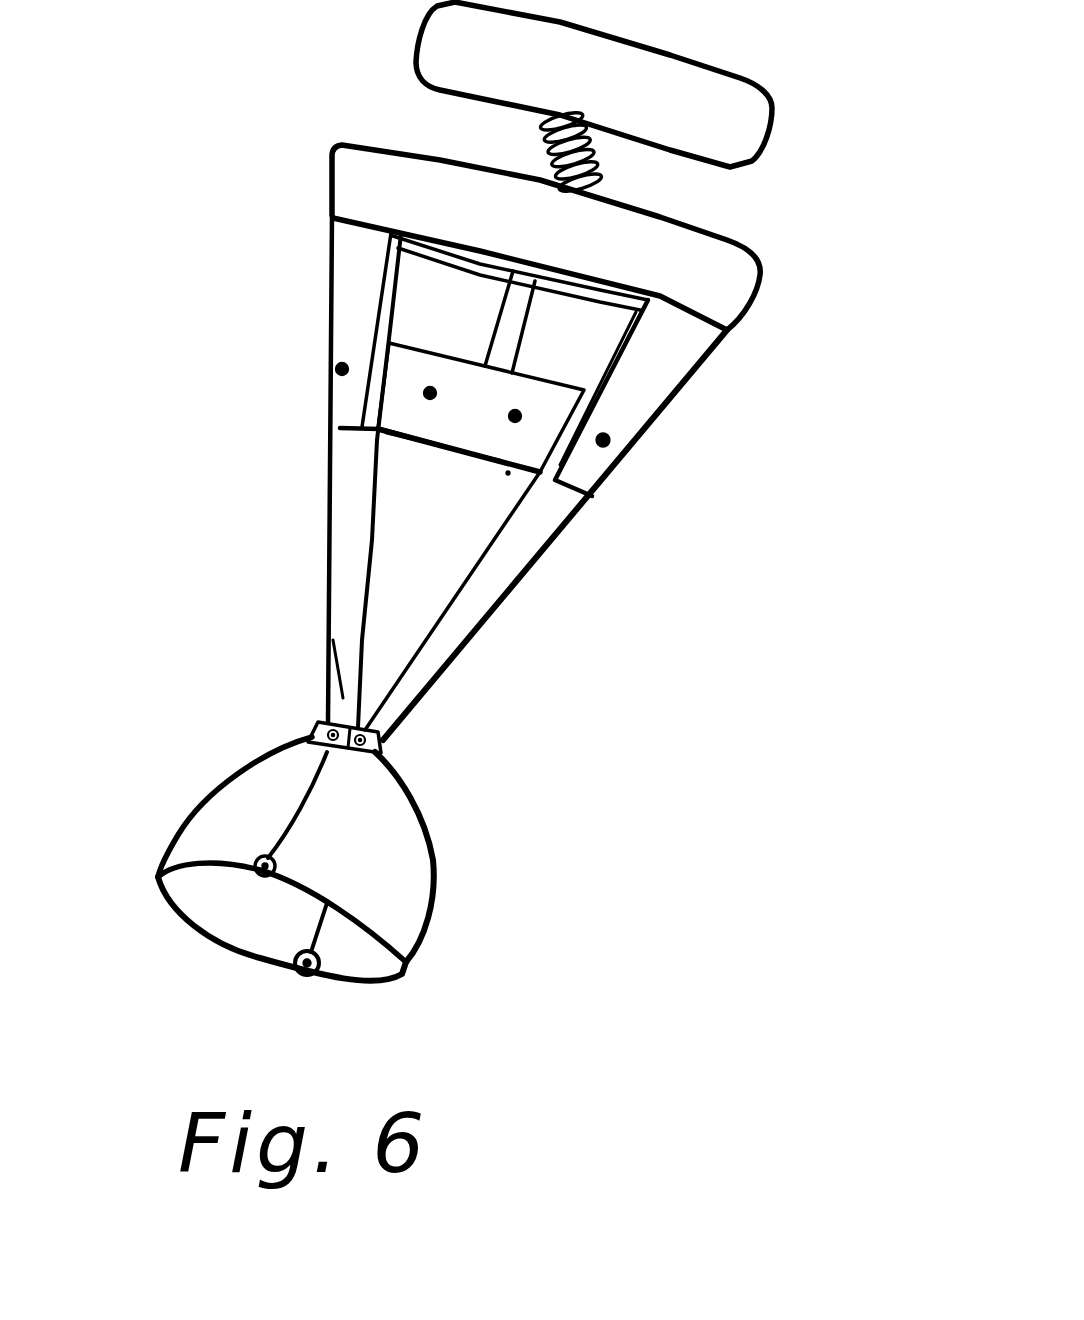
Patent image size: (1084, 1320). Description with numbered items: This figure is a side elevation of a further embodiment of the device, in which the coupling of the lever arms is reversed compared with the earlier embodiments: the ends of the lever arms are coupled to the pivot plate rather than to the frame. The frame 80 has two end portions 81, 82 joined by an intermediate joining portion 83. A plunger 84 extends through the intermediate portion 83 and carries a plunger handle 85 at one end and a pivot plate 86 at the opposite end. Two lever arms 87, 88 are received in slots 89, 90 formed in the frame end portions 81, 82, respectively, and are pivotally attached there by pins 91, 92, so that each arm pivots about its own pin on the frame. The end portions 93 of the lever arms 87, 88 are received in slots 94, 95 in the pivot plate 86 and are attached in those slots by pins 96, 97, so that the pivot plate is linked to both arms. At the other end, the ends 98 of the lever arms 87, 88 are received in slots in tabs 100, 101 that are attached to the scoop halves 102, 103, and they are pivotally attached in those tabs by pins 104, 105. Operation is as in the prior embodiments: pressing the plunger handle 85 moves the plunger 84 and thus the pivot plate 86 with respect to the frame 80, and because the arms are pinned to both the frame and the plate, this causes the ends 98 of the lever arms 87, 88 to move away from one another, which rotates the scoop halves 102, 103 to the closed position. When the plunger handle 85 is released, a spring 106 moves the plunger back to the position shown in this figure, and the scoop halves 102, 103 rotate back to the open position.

The frame 80 is at (256, 214).
The end portion 81 is at (330, 295).
The end portion 82 is at (670, 380).
The intermediate joining portion 83 is at (700, 243).
The plunger 84 is at (527, 316).
The plunger handle 85 is at (775, 116).
The pivot plate 86 is at (455, 432).
The lever arm 87 is at (333, 522).
The lever arm 88 is at (519, 580).
The slot 89 is at (340, 428).
The slot 90 is at (647, 423).
The pin 91 is at (330, 368).
The pin 92 is at (615, 452).
The end portions 93 is at (588, 402).
The slot 94 is at (396, 437).
The slot 95 is at (508, 473).
The pin 96 is at (428, 396).
The pin 97 is at (518, 421).
The ends 98 is at (390, 712).
The tab 100 is at (313, 737).
The tab 101 is at (384, 753).
The scoop half 102 is at (228, 822).
The scoop half 103 is at (413, 880).
The pin 104 is at (320, 721).
The pin 105 is at (385, 735).
The spring 106 is at (550, 141).